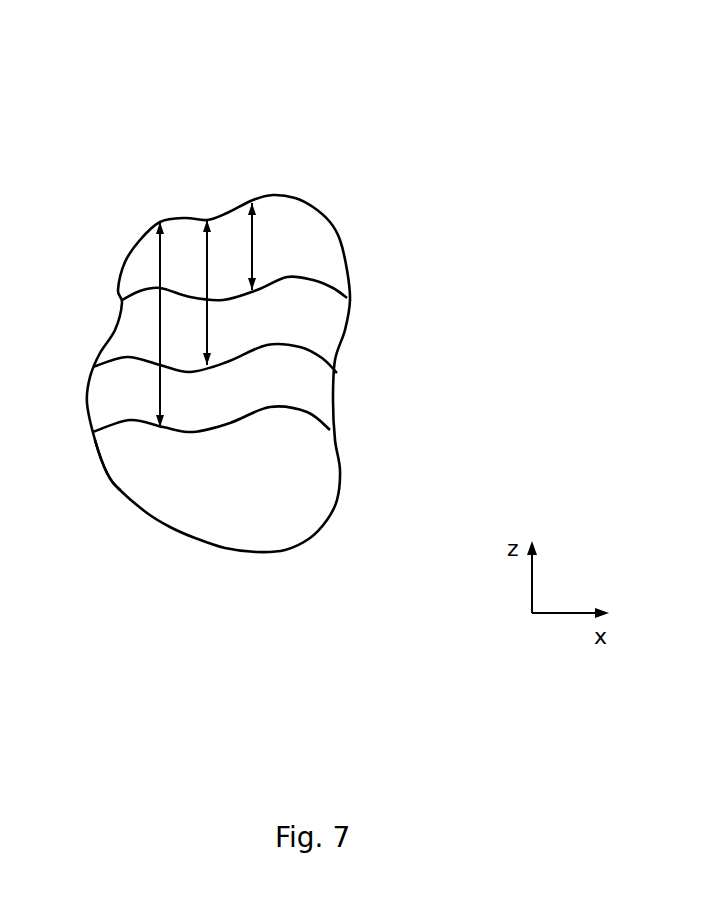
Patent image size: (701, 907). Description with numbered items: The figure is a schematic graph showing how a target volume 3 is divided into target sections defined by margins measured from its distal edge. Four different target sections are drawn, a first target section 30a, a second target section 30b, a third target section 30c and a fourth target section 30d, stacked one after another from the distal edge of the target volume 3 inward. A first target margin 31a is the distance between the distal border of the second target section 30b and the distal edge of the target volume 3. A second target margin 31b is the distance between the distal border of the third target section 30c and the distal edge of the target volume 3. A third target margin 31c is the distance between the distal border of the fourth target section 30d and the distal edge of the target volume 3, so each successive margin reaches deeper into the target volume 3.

The target volume 3 is at (330, 107).
The first target section 30a is at (310, 237).
The second target section 30b is at (327, 322).
The third target section 30c is at (312, 390).
The fourth target section 30d is at (323, 483).
The first target margin 31a is at (250, 235).
The second target margin 31b is at (203, 257).
The third target margin 31c is at (158, 270).